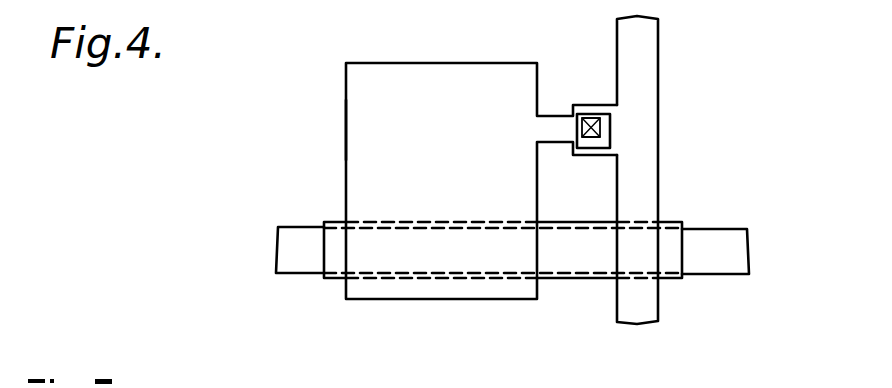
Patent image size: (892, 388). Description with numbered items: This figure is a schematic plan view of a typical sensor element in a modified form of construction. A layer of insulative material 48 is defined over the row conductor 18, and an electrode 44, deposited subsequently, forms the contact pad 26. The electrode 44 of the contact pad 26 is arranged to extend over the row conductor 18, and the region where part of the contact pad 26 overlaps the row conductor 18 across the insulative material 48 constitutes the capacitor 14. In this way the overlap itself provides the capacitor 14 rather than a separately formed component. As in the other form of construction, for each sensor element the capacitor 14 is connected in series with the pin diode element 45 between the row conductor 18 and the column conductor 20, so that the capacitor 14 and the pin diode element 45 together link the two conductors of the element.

The capacitor 14 is at (445, 255).
The row conductor 18 is at (725, 260).
The column conductor 20 is at (648, 62).
The contact pad 26 is at (451, 93).
The electrode 44 is at (345, 128).
The pin diode element 45 is at (590, 101).
The layer of insulative material 48 is at (336, 279).